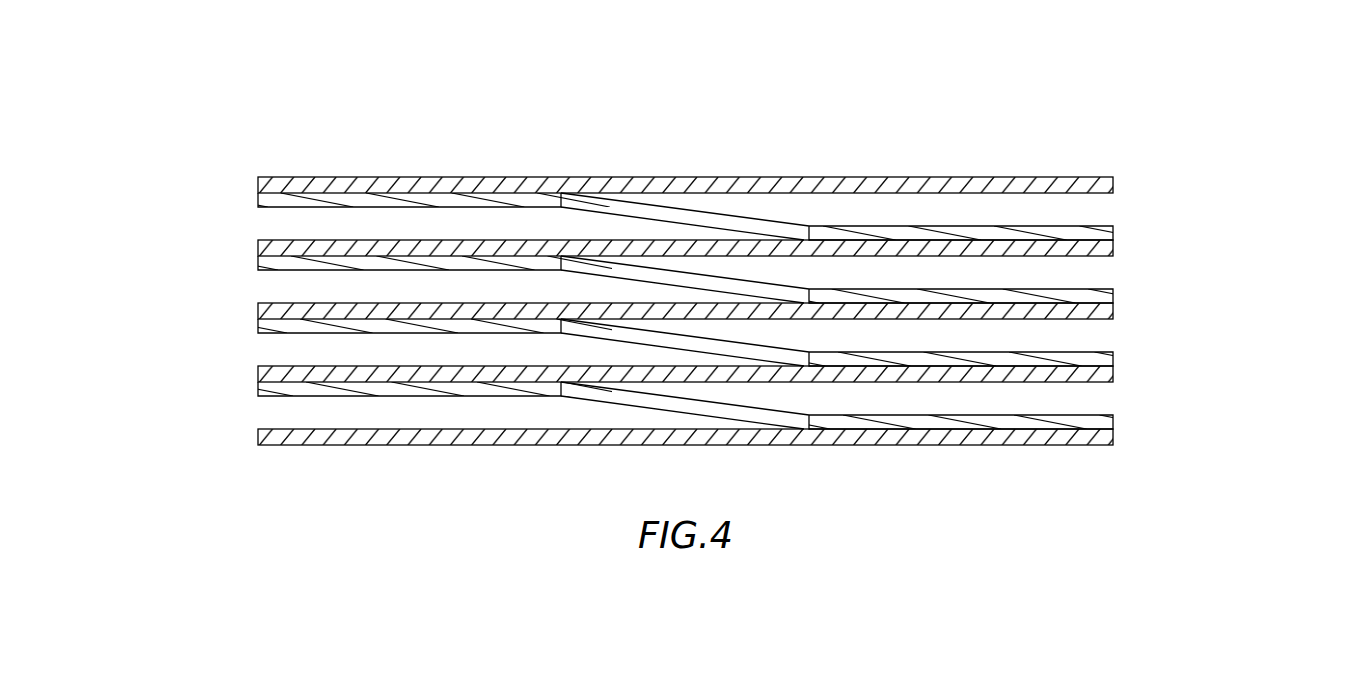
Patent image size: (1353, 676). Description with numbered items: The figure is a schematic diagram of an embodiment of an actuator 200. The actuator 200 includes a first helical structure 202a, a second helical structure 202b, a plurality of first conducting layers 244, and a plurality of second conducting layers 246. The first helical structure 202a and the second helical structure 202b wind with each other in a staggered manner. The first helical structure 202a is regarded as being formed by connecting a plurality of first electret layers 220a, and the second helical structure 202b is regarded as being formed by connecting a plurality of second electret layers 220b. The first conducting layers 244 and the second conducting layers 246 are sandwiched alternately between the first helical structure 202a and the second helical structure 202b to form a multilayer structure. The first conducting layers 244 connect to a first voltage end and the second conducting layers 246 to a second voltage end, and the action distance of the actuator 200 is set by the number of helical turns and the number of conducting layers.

The actuator 200 is at (225, 145).
The first conducting layer 244 is at (1113, 189).
The second conducting layer 246 is at (1113, 254).
The first electret layer 220a is at (1113, 236).
The second electret layer 220b is at (258, 263).
The first helical structure 202a is at (1252, 233).
The second helical structure 202b is at (155, 258).